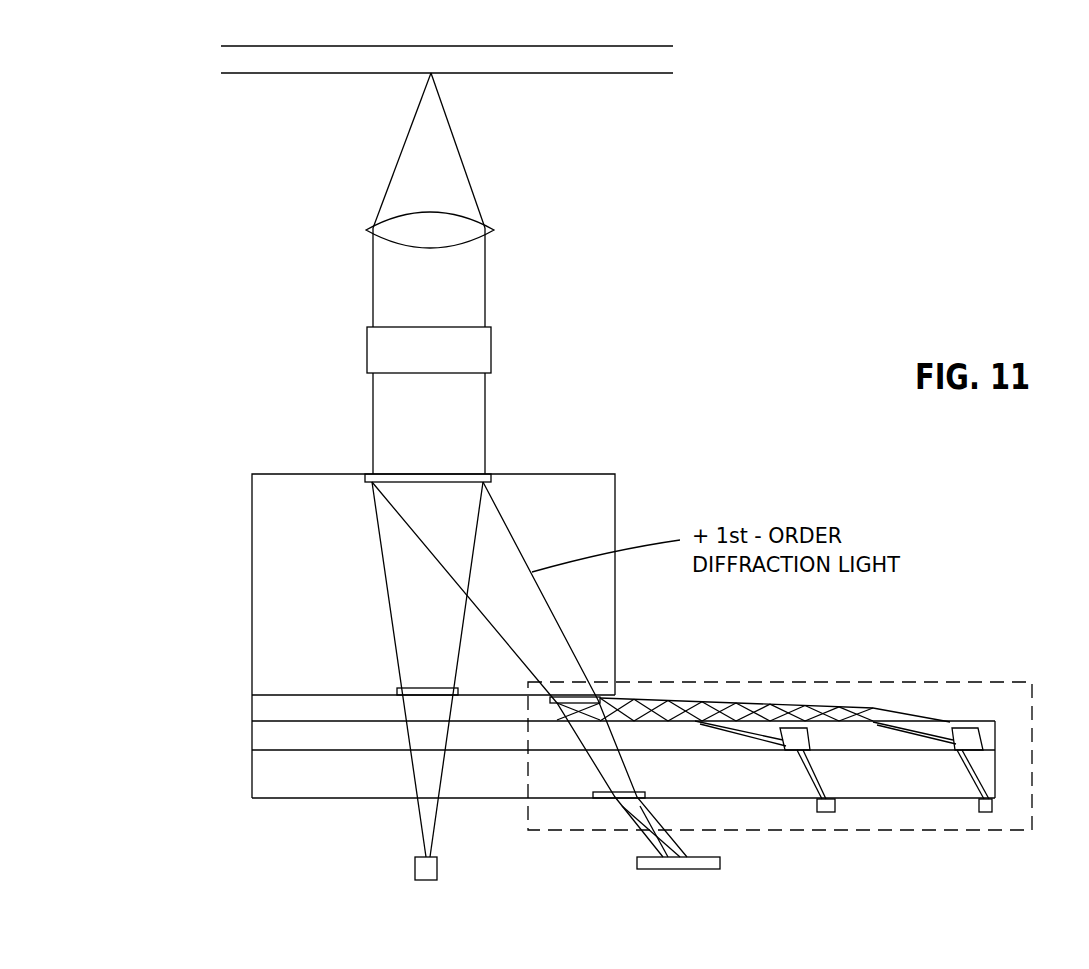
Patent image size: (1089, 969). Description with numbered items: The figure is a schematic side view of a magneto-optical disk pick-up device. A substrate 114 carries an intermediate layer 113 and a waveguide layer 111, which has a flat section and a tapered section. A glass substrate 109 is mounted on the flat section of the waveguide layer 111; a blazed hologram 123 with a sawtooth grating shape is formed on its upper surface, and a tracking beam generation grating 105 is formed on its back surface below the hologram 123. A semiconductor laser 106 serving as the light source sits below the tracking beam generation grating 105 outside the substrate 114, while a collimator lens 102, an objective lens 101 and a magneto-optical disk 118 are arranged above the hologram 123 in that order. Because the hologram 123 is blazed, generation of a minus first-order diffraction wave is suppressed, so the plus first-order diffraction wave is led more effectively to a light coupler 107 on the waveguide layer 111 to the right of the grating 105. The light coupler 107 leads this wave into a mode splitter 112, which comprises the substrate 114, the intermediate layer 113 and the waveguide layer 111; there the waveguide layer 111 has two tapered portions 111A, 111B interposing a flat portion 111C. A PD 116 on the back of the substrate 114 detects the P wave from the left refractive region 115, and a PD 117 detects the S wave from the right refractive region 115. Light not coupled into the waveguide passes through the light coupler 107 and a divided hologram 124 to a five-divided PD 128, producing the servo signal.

The magneto-optical disk 118 is at (662, 64).
The objective lens 101 is at (493, 231).
The collimator lens 102 is at (478, 356).
The hologram 123 is at (490, 473).
The glass substrate 109 is at (616, 500).
The tracking beam generation grating 105 is at (397, 690).
The semiconductor laser 106 is at (437, 870).
The light coupler 107 is at (604, 697).
The waveguide layer 111 is at (262, 710).
The tapered portion 111A is at (660, 703).
The tapered portion 111B is at (852, 706).
The flat waveguide layer portion 111C is at (740, 705).
The mode splitter 112 is at (973, 682).
The intermediate layer 113 is at (268, 738).
The substrate 114 is at (268, 777).
The refractive region 115 is at (808, 736).
The PD 116 is at (823, 812).
The PD 117 is at (985, 812).
The divided hologram 124 is at (605, 798).
The five-divided PD 128 is at (720, 864).